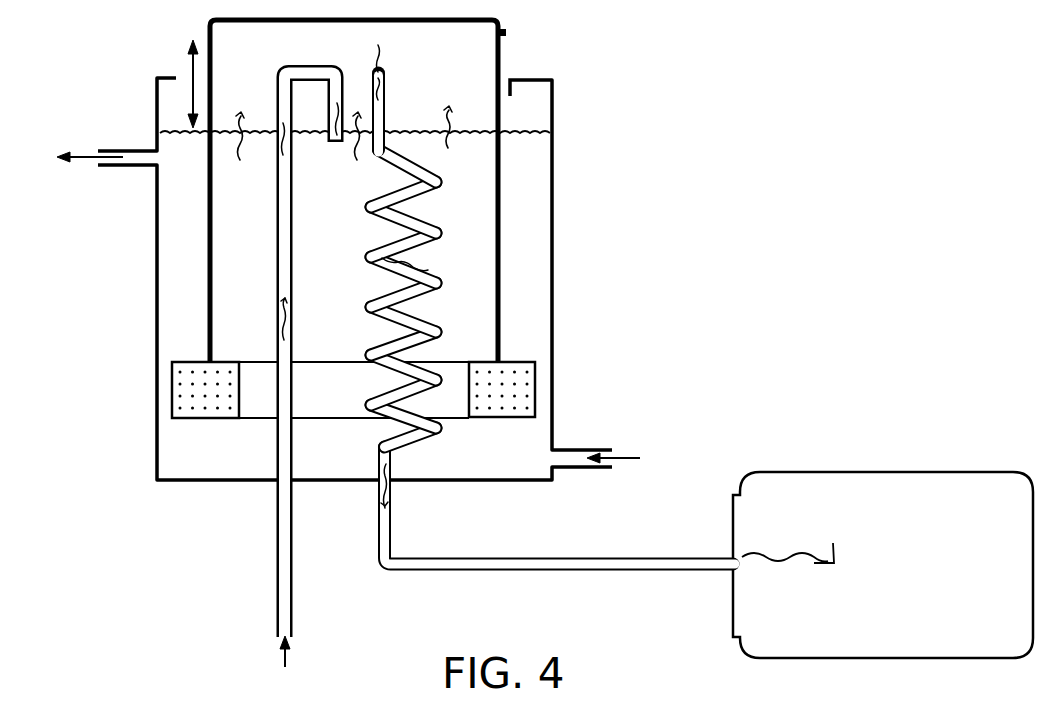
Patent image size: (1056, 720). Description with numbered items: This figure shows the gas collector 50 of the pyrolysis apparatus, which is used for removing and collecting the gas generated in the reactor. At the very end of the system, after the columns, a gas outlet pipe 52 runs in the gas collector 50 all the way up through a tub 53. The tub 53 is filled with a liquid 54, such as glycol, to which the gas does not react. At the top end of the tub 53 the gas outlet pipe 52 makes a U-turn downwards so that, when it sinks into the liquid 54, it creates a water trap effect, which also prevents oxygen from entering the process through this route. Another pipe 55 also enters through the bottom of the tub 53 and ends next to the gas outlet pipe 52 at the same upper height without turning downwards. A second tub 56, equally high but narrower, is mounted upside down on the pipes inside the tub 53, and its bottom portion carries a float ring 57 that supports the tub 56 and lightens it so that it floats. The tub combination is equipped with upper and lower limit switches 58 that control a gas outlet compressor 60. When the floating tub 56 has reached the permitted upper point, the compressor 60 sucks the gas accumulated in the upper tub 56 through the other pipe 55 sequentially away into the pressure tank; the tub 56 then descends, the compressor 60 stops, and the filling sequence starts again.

The gas collector 50 is at (545, 343).
The gas outlet pipe 52 is at (277, 607).
The tub 53 is at (155, 305).
The liquid 54 is at (533, 130).
The other pipe 55 is at (618, 555).
The upper tub 56 is at (502, 237).
The float ring 57 is at (523, 392).
The upper and lower limit switches 58 is at (512, 95).
The gas outlet compressor 60 is at (883, 468).